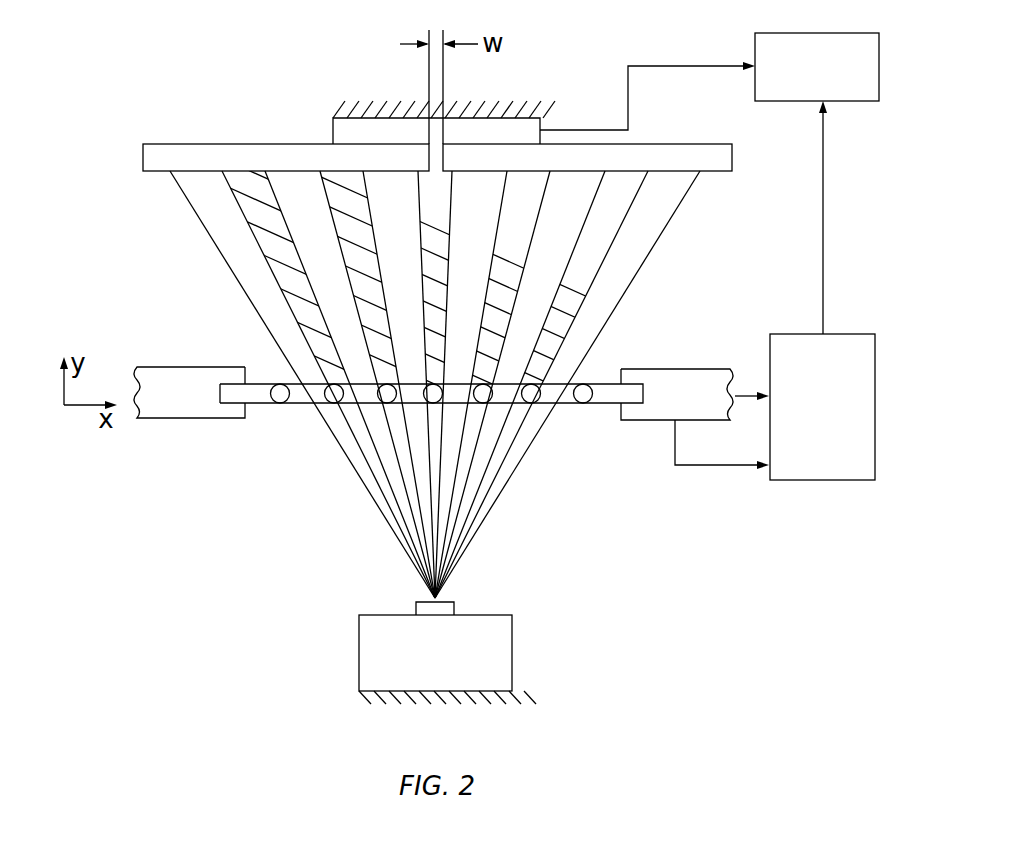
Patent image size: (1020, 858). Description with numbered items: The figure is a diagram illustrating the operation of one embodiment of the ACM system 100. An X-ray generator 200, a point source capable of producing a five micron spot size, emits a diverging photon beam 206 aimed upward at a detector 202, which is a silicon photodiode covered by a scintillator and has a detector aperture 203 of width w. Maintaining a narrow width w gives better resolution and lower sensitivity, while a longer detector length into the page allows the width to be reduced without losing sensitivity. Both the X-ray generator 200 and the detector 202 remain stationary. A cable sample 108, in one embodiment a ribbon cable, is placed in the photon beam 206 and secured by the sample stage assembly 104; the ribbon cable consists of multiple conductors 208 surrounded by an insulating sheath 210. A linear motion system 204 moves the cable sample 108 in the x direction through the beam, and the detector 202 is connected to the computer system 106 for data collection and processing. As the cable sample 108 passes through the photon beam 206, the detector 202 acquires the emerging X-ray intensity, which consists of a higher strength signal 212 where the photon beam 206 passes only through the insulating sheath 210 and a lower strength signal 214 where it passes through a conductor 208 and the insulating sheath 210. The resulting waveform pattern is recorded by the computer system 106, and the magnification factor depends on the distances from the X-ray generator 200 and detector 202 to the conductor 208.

The ACM system 100 is at (633, 573).
The sample stage assembly 104 is at (161, 405).
The computer system 106 is at (795, 78).
The cable sample 108 is at (571, 422).
The X-ray generator 200 is at (411, 667).
The detector 202 is at (342, 130).
The detector aperture 203 is at (156, 153).
The linear motion system 204 is at (797, 420).
The photon beam 206 is at (380, 513).
The conductors 208 is at (280, 403).
The insulating sheath 210 is at (258, 405).
The higher strength signal 212 is at (306, 218).
The lower strength signal 214 is at (292, 293).